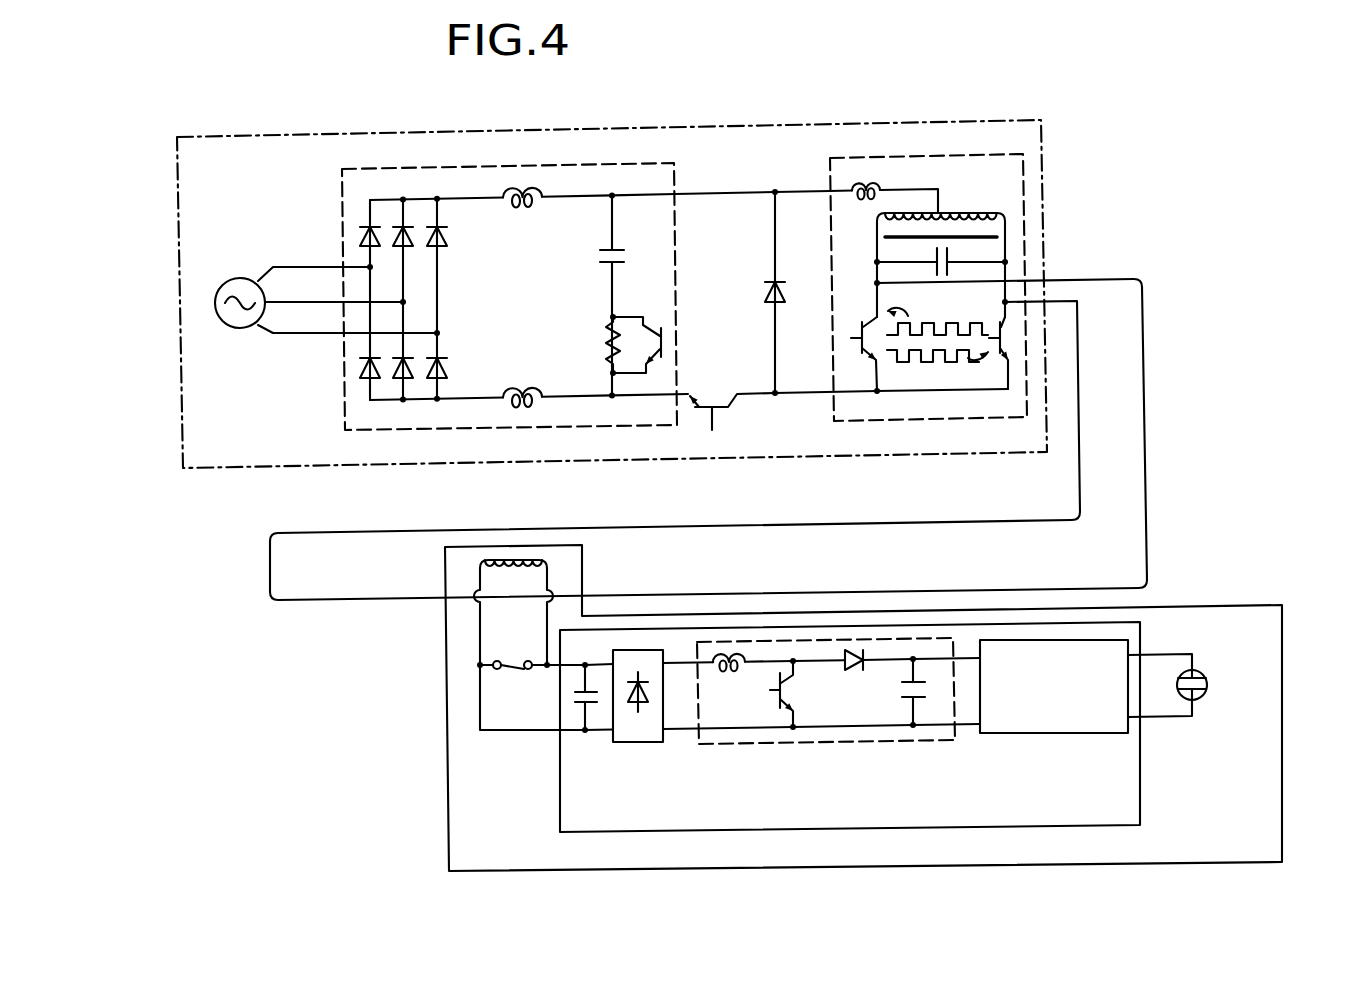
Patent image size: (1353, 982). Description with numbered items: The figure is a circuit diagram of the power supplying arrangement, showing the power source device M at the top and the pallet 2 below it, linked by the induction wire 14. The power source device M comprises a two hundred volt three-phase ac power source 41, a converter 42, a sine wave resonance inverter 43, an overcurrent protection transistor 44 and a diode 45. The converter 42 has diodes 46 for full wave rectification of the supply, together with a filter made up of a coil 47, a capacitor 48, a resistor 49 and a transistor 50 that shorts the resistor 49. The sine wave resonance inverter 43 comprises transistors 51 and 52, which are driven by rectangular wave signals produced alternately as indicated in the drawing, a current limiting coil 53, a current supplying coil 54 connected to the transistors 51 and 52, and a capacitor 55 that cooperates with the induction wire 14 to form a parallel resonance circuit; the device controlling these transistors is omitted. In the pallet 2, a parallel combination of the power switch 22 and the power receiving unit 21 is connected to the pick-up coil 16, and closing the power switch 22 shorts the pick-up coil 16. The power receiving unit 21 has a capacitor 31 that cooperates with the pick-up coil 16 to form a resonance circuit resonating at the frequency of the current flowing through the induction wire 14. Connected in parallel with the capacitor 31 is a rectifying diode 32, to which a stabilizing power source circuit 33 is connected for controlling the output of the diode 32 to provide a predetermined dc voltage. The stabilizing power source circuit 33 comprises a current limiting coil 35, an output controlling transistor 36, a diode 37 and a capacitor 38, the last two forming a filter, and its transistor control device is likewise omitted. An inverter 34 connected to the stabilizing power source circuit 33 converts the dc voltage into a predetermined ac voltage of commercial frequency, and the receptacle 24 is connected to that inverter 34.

The power source device M is at (1042, 167).
The pallet 2 is at (1283, 636).
The induction wire 14 is at (1145, 417).
The pick-up coil 16 is at (543, 560).
The power receiving unit 21 is at (1141, 752).
The power switch 22 is at (519, 672).
The receptacle 24 is at (1206, 677).
The capacitor 31 is at (562, 698).
The rectifying diode 32 is at (645, 743).
The stabilizing power source circuit 33 is at (957, 742).
The inverter 34 is at (1062, 735).
The current limiting coil 35 is at (728, 667).
The output controlling transistor 36 is at (792, 694).
The diode 37 is at (908, 693).
The capacitor 38 is at (857, 672).
The 3-phase ac power source 41 is at (243, 278).
The converter 42 is at (677, 178).
The sine wave resonance inverter 43 is at (827, 176).
The overcurrent protection transistor 44 is at (718, 398).
The diode 45 is at (760, 288).
The diodes 46 is at (437, 282).
The coil 47 is at (520, 210).
The capacitor 48 is at (598, 257).
The resistor 49 is at (602, 340).
The transistor 50 is at (661, 326).
The transistor 51 is at (858, 330).
The transistor 52 is at (998, 330).
The current limiting coil 53 is at (882, 183).
The current supplying coil 54 is at (968, 212).
The capacitor 55 is at (952, 255).